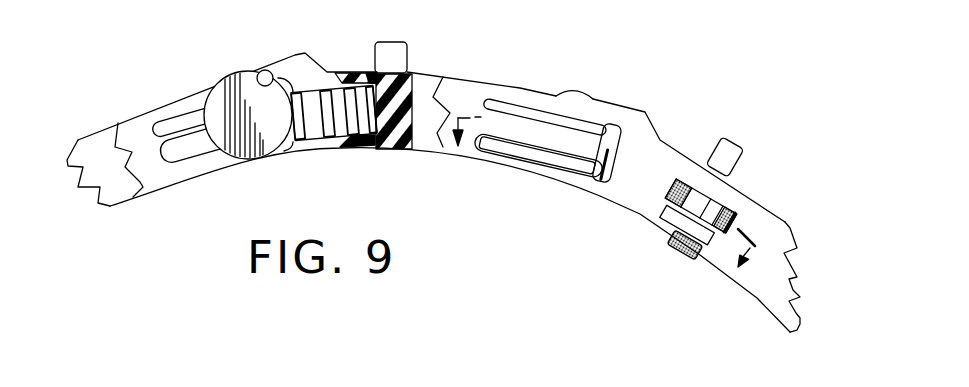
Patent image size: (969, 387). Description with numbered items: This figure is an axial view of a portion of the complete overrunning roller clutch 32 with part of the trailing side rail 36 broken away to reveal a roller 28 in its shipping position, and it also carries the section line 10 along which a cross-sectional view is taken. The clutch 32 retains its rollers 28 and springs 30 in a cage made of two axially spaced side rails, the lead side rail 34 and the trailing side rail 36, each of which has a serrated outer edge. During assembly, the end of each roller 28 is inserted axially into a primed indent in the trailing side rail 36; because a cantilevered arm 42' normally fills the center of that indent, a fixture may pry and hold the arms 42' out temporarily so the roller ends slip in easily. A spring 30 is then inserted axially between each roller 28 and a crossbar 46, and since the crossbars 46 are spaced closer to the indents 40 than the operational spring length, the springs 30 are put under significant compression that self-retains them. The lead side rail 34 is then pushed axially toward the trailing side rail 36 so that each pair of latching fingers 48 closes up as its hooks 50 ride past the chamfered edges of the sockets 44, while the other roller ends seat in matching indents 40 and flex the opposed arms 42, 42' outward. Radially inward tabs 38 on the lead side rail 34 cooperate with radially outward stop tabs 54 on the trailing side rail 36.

The section line 10- 10 is at (439, 168).
The roller 28 is at (213, 104).
The spring 30 is at (313, 130).
The overrunning roller clutch 32 is at (776, 162).
The lead side rail 34 is at (756, 312).
The trailing side rail 36 is at (131, 104).
The tab 38 is at (685, 258).
The indent 40 is at (262, 70).
The cantilevered arm 42 is at (542, 168).
The cantilevered arm 42' is at (190, 179).
The socket 44 is at (683, 185).
The cross bar 46 is at (382, 147).
The latching finger 48 is at (685, 248).
The hook 50 is at (670, 205).
The stop tab 54 is at (393, 52).